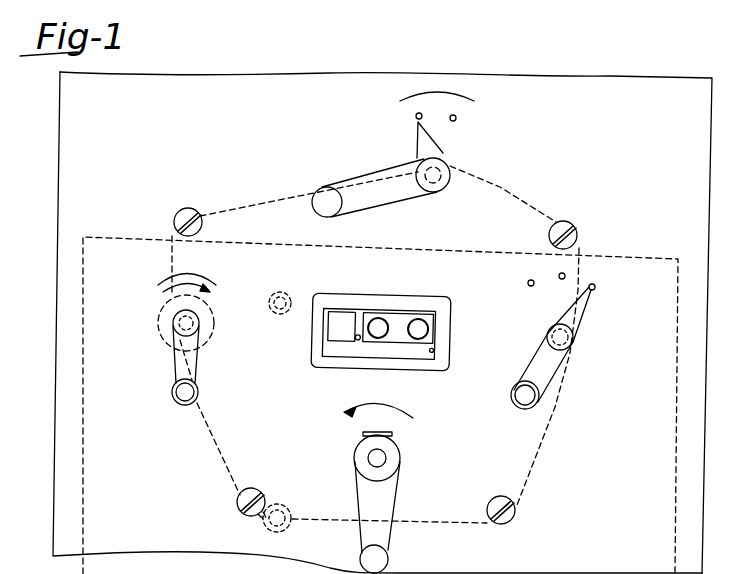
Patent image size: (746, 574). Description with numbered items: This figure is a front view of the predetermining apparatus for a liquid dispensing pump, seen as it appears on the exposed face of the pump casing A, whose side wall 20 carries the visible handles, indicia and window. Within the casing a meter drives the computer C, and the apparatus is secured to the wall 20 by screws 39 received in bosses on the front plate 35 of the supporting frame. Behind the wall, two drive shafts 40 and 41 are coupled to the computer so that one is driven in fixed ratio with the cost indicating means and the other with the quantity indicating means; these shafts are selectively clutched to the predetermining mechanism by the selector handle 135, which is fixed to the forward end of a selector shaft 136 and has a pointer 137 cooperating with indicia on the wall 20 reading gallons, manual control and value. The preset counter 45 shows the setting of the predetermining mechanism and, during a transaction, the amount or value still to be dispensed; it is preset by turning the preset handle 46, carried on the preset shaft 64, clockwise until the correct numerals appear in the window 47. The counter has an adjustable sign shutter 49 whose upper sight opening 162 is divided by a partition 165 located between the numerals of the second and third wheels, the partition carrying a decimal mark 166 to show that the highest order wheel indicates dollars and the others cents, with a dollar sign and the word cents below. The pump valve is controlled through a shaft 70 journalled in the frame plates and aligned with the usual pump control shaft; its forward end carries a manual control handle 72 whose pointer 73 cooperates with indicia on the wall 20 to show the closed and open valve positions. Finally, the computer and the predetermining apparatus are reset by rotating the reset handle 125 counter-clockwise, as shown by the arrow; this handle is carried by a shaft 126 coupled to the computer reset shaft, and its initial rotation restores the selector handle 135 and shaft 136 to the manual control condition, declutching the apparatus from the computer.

The pump casing A is at (57, 128).
The side wall 20 is at (58, 178).
The computer C is at (82, 263).
The front plate 35 is at (520, 197).
The screws 39 is at (183, 213).
The drive shaft 40 is at (274, 313).
The drive shaft 41 is at (283, 510).
The preset counter 45 is at (400, 336).
The preset handle 46 is at (176, 365).
The window 47 is at (436, 349).
The sign shutter 49 is at (355, 350).
The preset shaft 64 is at (174, 322).
The shaft 70 is at (452, 170).
The manual control handle 72 is at (410, 194).
The pointer 73 is at (439, 148).
The reset handle 125 is at (392, 503).
The shaft 126 is at (380, 458).
The selector handle 135 is at (553, 365).
The selector shaft 136 is at (573, 340).
The pointer 137 is at (582, 312).
The upper sight opening 162 is at (419, 317).
The partition 165 is at (362, 318).
The decimal mark 166 is at (359, 341).